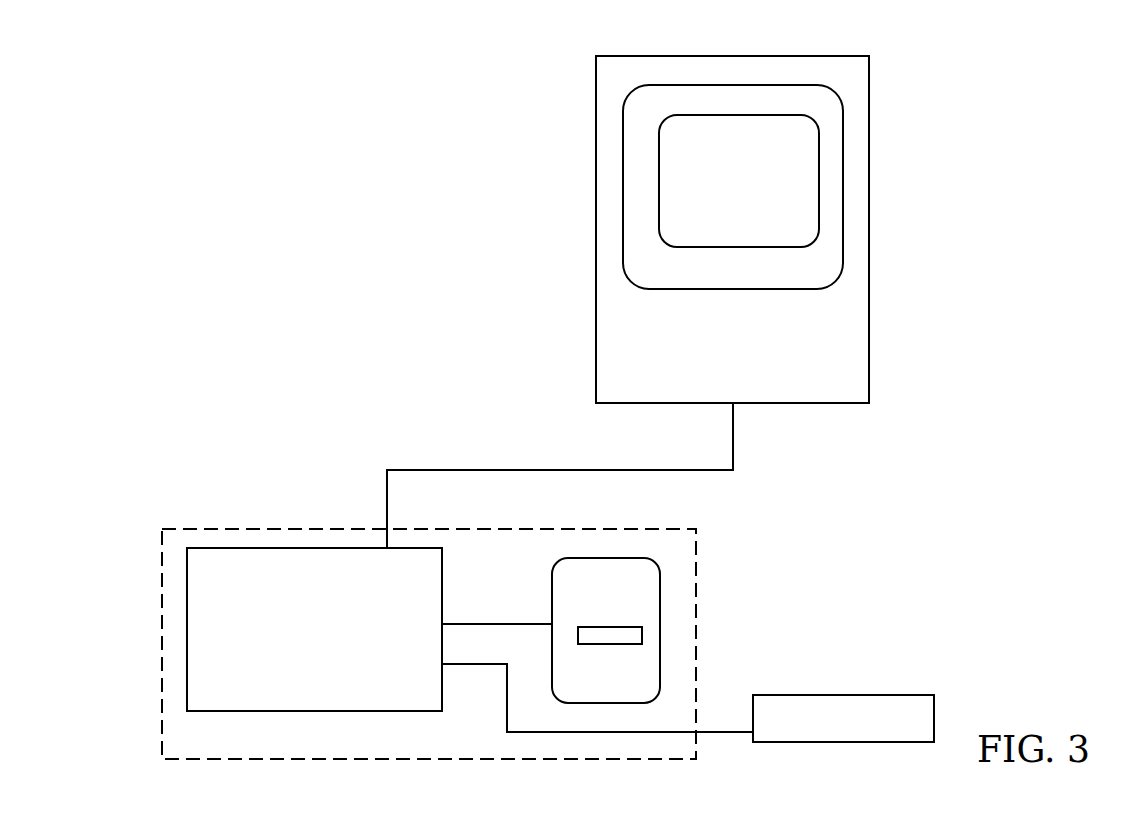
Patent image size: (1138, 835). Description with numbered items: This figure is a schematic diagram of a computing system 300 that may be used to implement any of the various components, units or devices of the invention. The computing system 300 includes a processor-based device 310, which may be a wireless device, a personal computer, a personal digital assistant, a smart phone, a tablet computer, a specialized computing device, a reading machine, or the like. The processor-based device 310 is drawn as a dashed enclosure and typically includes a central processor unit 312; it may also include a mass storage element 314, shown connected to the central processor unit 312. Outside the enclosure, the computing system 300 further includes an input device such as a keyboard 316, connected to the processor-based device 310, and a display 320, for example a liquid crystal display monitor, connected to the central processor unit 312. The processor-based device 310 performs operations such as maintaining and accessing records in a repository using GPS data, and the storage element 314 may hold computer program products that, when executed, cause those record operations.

The computing system 300 is at (360, 117).
The processor-based device 310 is at (530, 766).
The central processor unit 312 is at (323, 548).
The mass storage element 314 is at (660, 605).
The keyboard 316 is at (770, 695).
The display 320 is at (596, 140).